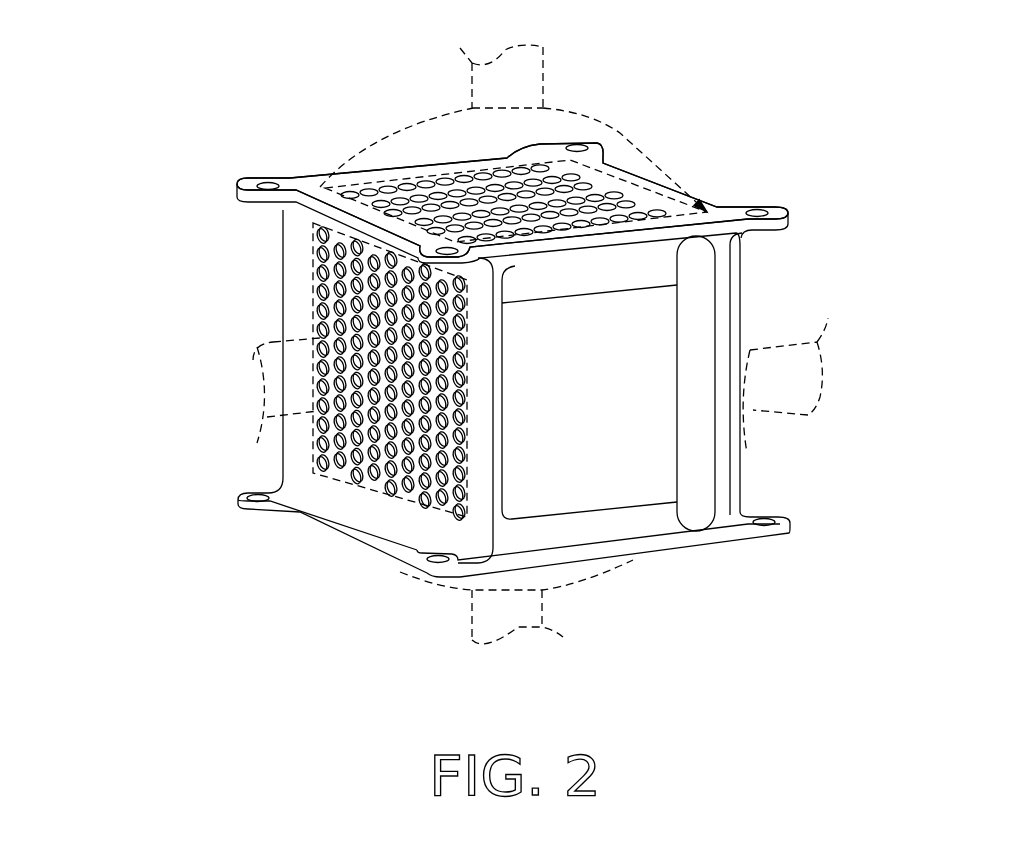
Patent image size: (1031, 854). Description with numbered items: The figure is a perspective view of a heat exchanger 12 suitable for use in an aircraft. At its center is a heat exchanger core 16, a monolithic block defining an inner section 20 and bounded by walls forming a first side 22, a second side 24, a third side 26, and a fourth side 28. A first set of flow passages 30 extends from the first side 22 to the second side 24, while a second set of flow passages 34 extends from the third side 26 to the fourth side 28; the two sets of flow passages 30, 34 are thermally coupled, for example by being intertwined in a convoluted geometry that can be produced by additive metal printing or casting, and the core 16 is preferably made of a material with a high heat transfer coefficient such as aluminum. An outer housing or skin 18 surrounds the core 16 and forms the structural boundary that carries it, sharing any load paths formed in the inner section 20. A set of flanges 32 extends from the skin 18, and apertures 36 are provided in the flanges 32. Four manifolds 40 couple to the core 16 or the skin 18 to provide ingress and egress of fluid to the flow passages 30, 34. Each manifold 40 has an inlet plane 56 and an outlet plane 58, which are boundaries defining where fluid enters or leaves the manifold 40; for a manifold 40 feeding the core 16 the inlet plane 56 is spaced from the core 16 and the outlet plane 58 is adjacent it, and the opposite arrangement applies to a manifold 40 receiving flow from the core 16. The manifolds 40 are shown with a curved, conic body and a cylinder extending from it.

The heat exchanger 12 is at (947, 58).
The heat exchanger core 16 is at (666, 316).
The skin 18 is at (347, 215).
The inner section 20 is at (700, 506).
The first side 22 is at (297, 446).
The second side 24 is at (743, 470).
The third side 26 is at (658, 207).
The fourth side 28 is at (587, 557).
The first set of flow passages 30 is at (421, 185).
The set of flanges 32 is at (237, 197).
The second set of flow passages 34 is at (365, 492).
The apertures 36 is at (271, 185).
The manifolds 40 is at (429, 122).
The inlet plane 56 is at (503, 113).
The outlet plane 58 is at (483, 336).